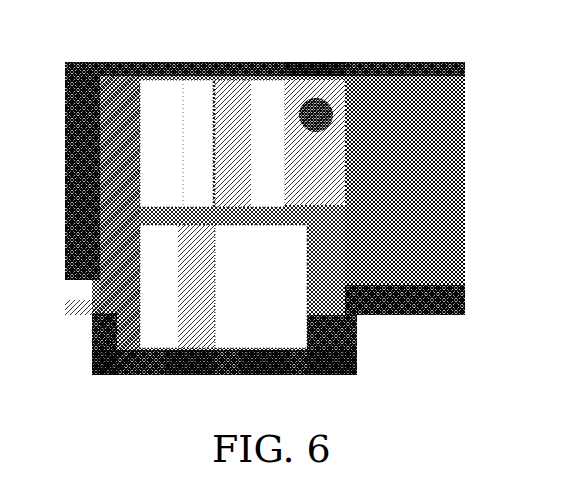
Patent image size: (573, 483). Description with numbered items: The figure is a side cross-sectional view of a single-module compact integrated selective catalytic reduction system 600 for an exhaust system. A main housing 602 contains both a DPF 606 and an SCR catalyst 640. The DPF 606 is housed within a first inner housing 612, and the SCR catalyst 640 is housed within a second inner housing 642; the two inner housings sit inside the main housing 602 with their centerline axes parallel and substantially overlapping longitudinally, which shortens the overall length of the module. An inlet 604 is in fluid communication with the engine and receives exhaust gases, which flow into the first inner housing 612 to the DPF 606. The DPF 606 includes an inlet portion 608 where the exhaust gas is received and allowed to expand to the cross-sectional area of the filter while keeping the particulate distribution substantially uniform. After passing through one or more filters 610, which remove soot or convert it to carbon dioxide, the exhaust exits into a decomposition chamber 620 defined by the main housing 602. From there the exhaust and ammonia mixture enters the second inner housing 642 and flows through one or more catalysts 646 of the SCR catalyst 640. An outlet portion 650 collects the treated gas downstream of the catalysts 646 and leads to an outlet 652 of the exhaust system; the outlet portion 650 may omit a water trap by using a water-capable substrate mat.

The integrated selective catalytic reduction system 600 is at (482, 70).
The main housing 602 is at (126, 378).
The inlet 604 is at (70, 262).
The DPF 606 is at (190, 378).
The inlet portion 608 is at (94, 346).
The filters 610 is at (223, 286).
The first inner housing 612 is at (256, 352).
The decomposition chamber 620 is at (332, 245).
The SCR catalyst 640 is at (233, 70).
The second inner housing 642 is at (301, 70).
The catalysts 646 is at (213, 143).
The outlet portion 650 is at (338, 186).
The outlet 652 is at (336, 122).